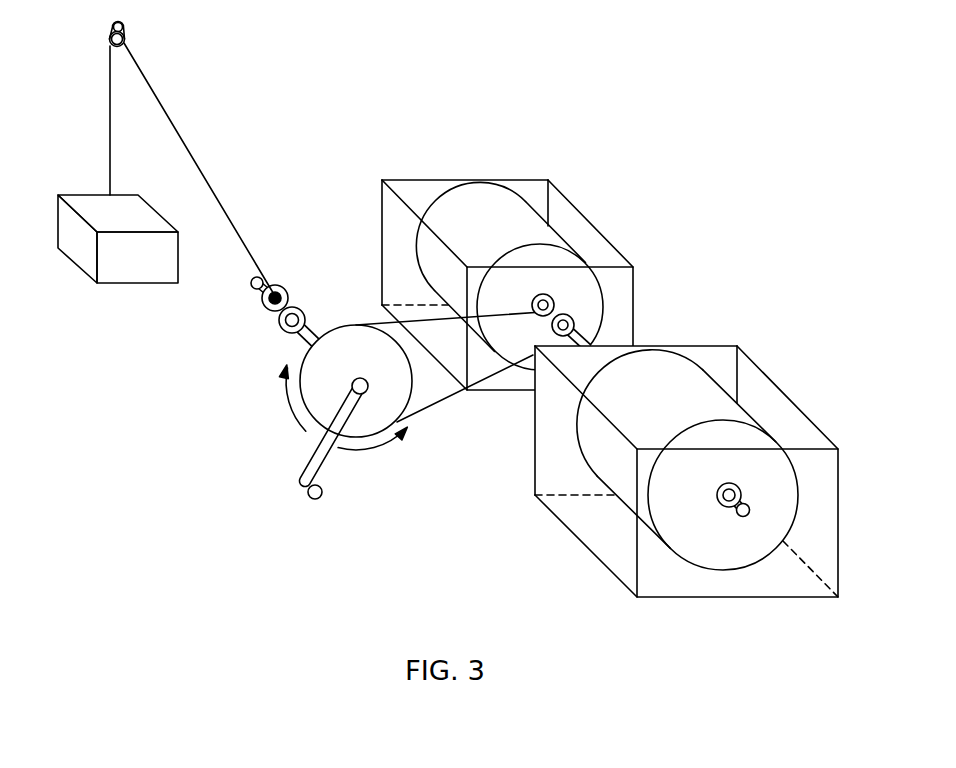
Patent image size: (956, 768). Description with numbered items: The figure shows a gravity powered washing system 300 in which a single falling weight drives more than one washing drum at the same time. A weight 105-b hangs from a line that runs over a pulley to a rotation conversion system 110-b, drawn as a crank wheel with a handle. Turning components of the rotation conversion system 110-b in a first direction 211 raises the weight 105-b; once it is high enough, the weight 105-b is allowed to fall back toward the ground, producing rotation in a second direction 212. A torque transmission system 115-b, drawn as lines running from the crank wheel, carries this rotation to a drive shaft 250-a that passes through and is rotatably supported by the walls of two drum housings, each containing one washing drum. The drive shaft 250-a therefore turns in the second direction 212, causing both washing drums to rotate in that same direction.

The gravity powered washing system 300 is at (443, 298).
The weight 105-b is at (97, 192).
The rotation conversion system 110-b is at (295, 342).
The torque transmission system 115-b is at (368, 305).
The first direction 211 is at (283, 402).
The second direction 212 is at (372, 460).
The drive shaft 250-a is at (588, 337).